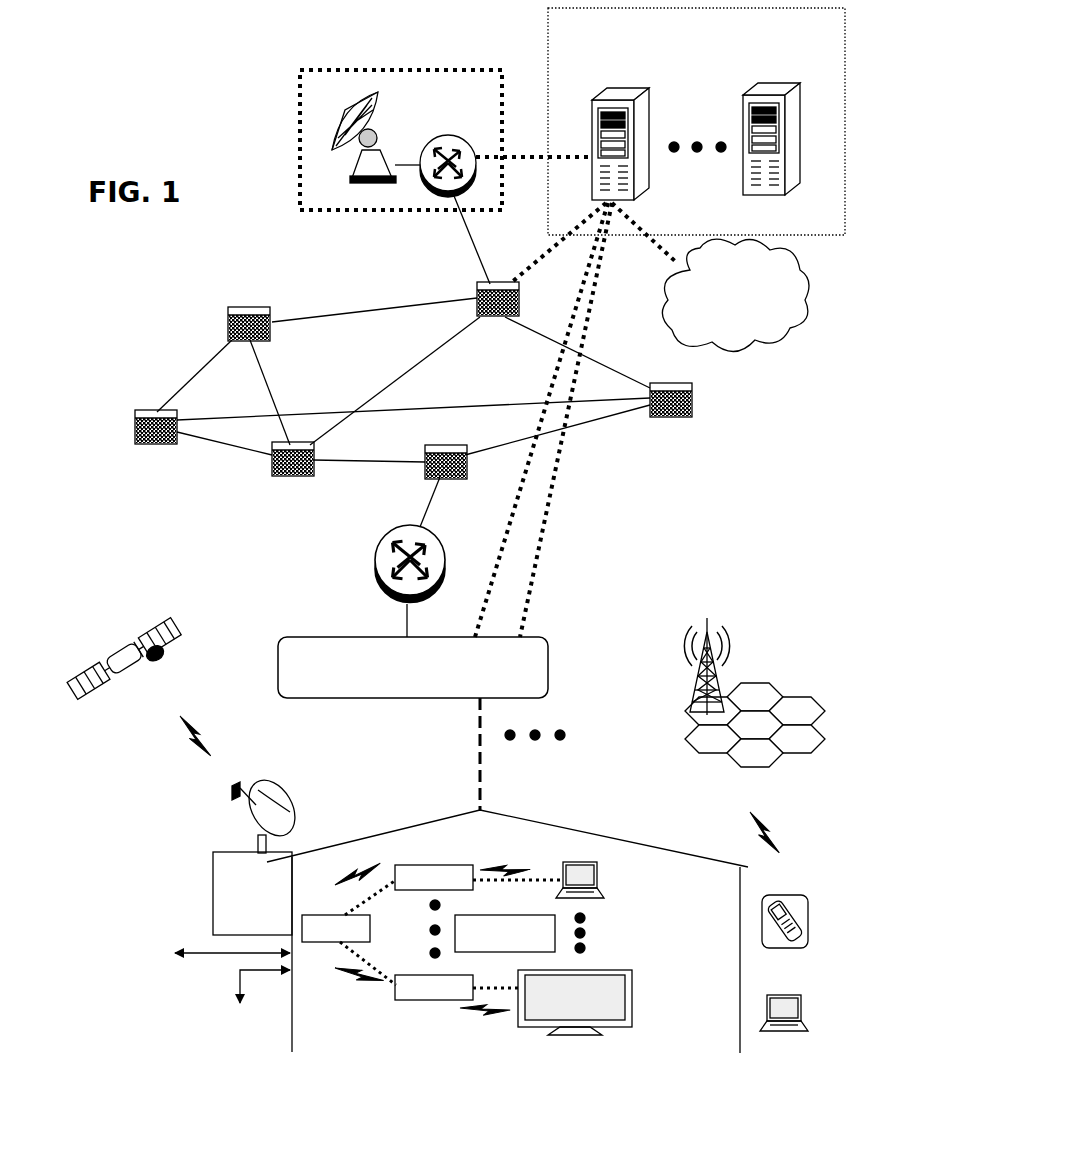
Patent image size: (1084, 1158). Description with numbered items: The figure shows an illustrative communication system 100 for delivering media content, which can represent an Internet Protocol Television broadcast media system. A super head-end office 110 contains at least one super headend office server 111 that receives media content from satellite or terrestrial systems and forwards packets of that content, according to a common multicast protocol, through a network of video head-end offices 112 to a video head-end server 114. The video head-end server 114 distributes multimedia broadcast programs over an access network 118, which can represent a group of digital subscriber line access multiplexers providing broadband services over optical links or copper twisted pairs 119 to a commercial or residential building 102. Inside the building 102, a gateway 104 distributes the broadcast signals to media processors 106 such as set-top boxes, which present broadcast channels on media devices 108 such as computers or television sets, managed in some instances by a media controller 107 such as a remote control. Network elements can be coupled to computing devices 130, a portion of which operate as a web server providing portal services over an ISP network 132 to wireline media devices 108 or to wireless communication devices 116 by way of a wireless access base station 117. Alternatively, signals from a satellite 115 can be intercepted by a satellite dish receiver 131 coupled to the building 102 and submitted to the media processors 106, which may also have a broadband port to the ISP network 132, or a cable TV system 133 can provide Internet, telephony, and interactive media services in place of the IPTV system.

The communication system 100 is at (129, 153).
The building 102 is at (480, 939).
The gateway 104 is at (336, 928).
The media processor 106 is at (437, 932).
The media controller 107 is at (520, 933).
The media device 108 is at (585, 860).
The super head-end office 110 is at (294, 150).
The super headend office server 111 is at (428, 140).
The network of video head-end offices 112 is at (137, 430).
The video head-end server 114 is at (375, 567).
The satellite 115 is at (85, 665).
The wireless communication device 116 is at (808, 908).
The wireless access base station 117 is at (757, 684).
The access network 118 is at (548, 663).
The optical links or copper twisted pairs 119 is at (472, 785).
The computing devices 130 is at (771, 92).
The satellite dish receiver 131 is at (196, 813).
The ISP network 132 is at (425, 601).
The cable TV system 133 is at (239, 1020).